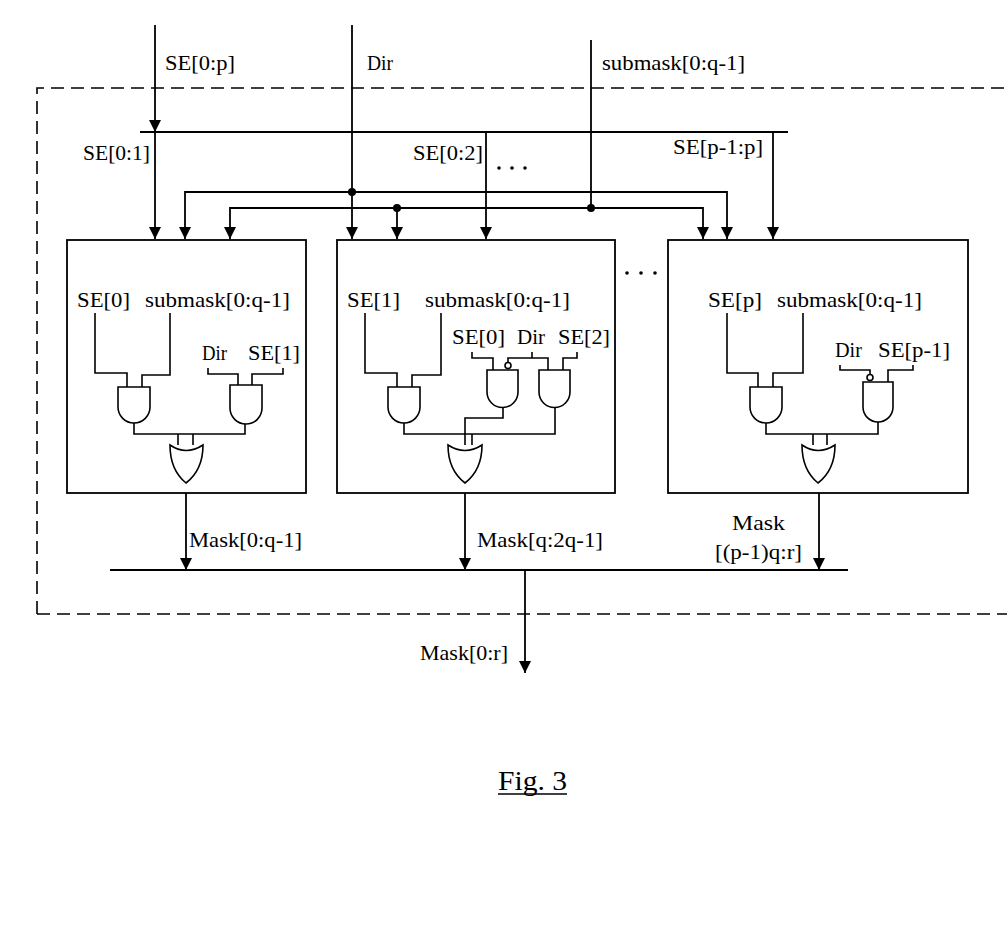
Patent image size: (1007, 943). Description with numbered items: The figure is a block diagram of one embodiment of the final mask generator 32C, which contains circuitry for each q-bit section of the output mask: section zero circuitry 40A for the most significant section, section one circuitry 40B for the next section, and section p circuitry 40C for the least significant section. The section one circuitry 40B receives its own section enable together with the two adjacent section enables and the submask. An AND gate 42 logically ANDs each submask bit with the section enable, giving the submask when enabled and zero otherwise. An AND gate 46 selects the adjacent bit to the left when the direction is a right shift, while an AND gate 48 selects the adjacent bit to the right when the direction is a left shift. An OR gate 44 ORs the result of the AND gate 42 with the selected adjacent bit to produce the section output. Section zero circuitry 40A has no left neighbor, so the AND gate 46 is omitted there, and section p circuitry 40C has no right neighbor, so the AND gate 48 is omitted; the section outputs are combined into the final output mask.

The final mask generator 32C is at (1005, 144).
The section 0 circuitry 40A is at (250, 270).
The section 1 circuitry 40B is at (540, 270).
The section p circuitry 40C is at (885, 270).
The AND gate 42 is at (135, 403).
The OR gate 44 is at (178, 456).
The AND gate 46 is at (493, 387).
The AND gate 48 is at (238, 397).